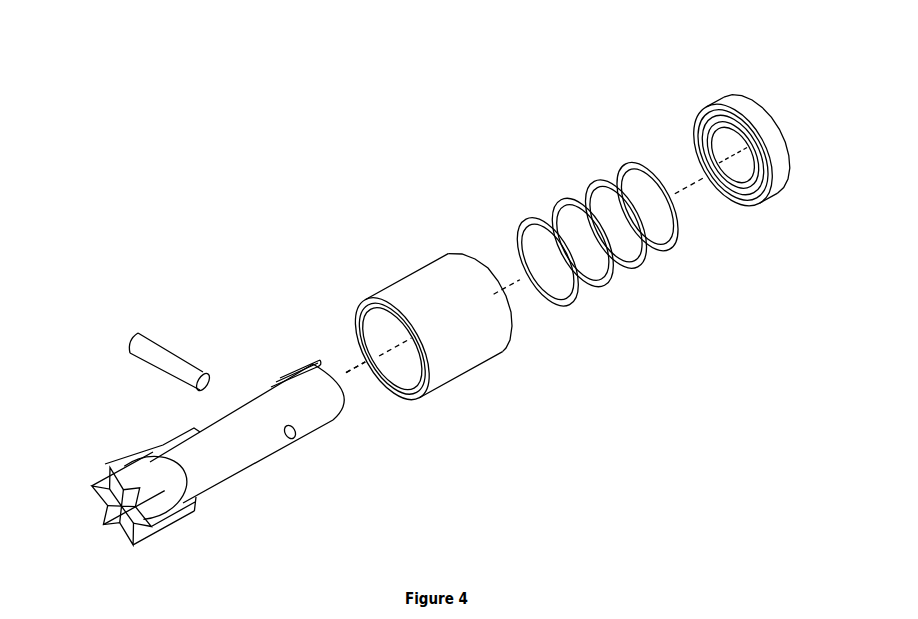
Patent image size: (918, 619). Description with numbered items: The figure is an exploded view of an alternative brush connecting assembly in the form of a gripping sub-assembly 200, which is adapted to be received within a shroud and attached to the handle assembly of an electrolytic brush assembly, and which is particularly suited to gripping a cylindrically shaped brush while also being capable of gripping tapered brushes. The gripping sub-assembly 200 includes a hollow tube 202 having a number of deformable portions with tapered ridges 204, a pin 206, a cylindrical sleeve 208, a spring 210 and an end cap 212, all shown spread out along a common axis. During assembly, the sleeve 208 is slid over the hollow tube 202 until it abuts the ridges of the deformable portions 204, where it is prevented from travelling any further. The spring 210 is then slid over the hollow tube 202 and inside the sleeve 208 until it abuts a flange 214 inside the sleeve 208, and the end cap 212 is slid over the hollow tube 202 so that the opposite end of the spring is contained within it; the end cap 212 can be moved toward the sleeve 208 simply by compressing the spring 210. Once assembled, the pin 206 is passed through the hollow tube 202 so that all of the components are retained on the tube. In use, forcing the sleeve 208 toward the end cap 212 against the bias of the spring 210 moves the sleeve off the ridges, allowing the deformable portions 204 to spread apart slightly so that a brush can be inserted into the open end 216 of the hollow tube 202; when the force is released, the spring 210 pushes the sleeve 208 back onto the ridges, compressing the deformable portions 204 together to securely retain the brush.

The gripping sub-assembly 200 is at (614, 432).
The hollow tube 202 is at (165, 446).
The deformable portions with tapered ridges 204 is at (160, 507).
The pin 206 is at (131, 338).
The cylindrical sleeve 208 is at (407, 275).
The spring 210 is at (570, 197).
The end cap 212 is at (711, 100).
The flange 214 is at (405, 360).
The open end 216 is at (123, 508).